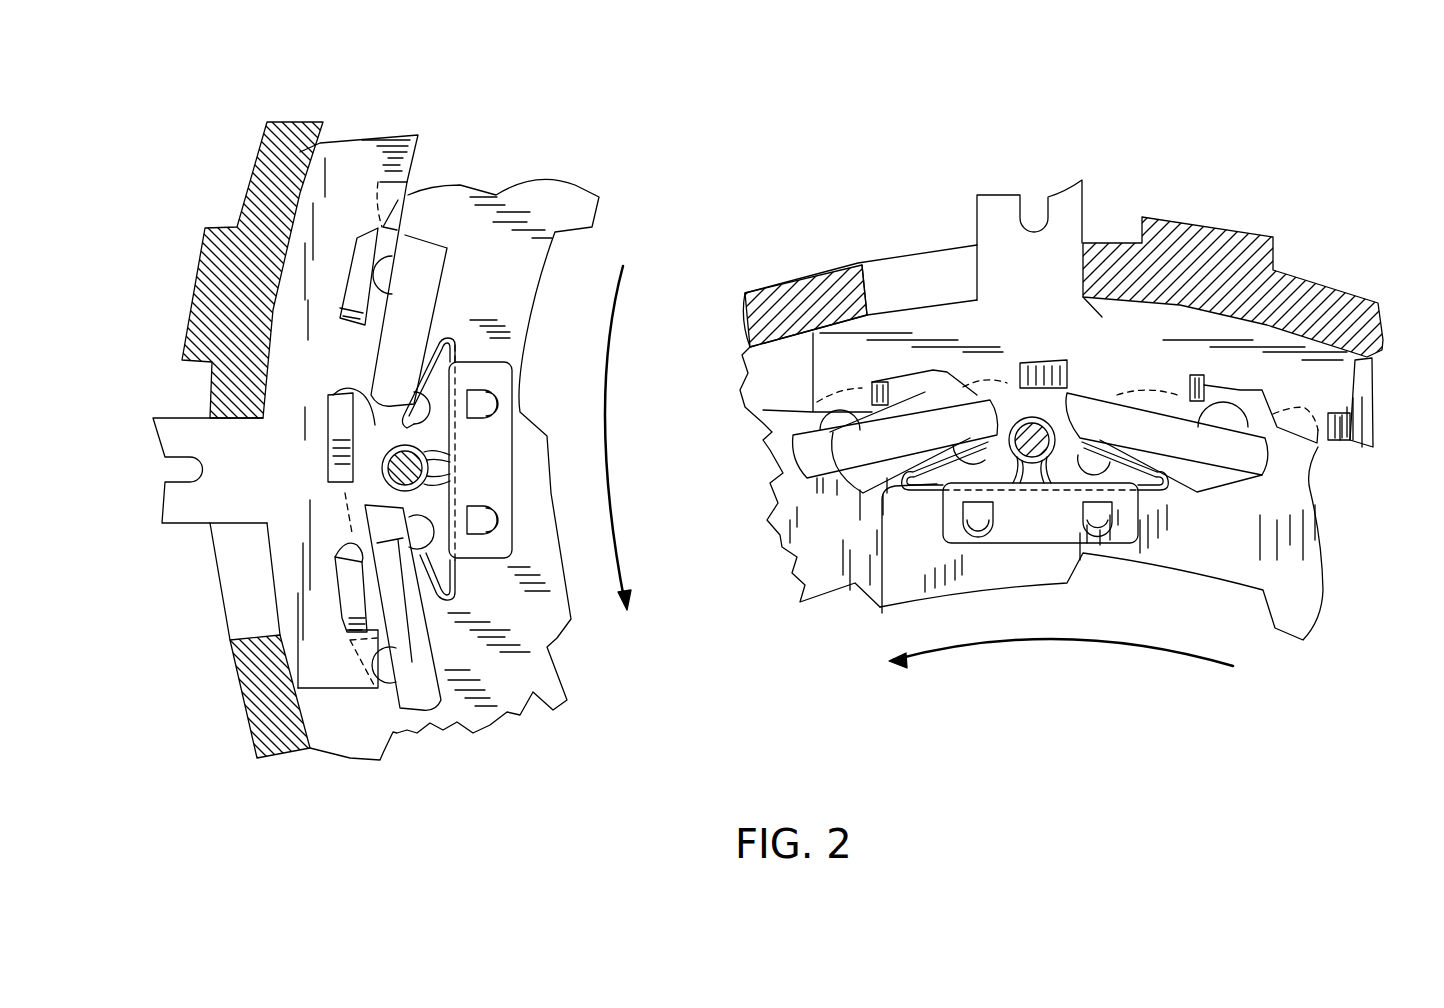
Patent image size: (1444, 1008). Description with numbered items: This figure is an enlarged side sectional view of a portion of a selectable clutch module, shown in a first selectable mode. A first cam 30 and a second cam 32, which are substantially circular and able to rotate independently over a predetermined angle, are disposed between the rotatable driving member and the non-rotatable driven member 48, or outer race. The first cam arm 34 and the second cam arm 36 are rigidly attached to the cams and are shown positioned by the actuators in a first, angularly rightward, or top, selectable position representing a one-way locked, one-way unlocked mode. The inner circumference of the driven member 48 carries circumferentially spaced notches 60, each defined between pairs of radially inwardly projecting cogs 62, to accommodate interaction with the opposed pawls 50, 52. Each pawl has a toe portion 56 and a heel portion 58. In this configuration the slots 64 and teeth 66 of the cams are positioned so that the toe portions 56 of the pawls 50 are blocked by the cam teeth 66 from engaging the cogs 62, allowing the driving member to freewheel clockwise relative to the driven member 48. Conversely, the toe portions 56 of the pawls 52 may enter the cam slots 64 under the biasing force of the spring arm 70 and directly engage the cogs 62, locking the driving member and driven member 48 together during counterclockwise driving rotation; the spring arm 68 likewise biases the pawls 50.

The first cam 30 is at (1102, 317).
The second cam 32 is at (280, 400).
The first cam arm 34 is at (998, 218).
The second cam arm 36 is at (178, 500).
The driven member 48 is at (260, 180).
The pawl 50 is at (412, 662).
The pawl 52 is at (428, 295).
The toe portion 56 is at (370, 422).
The heel portion 58 is at (422, 250).
The notch 60 is at (345, 348).
The cog 62 is at (360, 305).
The slot 64 is at (355, 262).
The tooth 66 is at (403, 203).
The spring arm 68 is at (566, 617).
The spring arm 70 is at (410, 382).